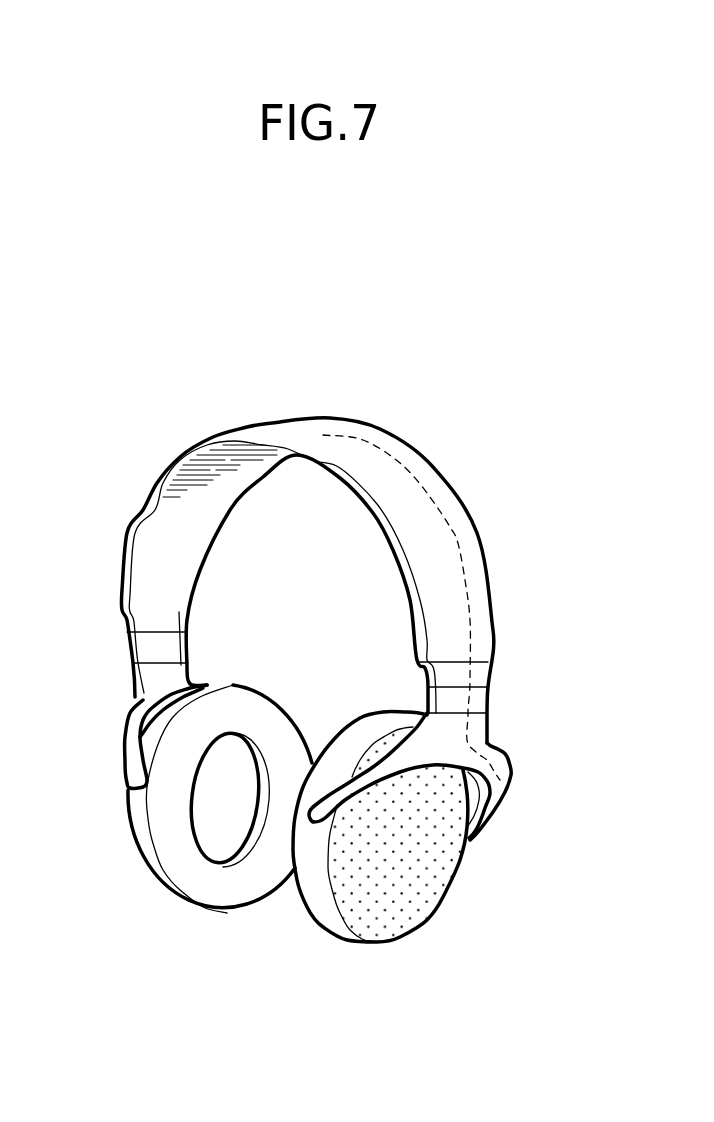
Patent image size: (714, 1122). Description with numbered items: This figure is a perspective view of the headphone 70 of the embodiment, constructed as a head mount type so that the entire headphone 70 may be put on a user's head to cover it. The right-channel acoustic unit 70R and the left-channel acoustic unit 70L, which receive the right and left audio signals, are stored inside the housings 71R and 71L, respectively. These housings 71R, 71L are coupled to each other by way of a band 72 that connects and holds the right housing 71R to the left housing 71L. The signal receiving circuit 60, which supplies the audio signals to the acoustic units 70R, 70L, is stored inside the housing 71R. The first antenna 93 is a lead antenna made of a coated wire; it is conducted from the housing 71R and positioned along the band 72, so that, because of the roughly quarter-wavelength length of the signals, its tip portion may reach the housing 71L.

The headphone 70 is at (329, 381).
The left-channel acoustic unit 70L is at (140, 834).
The right-channel acoustic unit 70R is at (418, 915).
The housing 71L is at (225, 905).
The housing 71R is at (327, 913).
The band 72 is at (127, 537).
The first antenna 93 is at (462, 533).
The signal receiving circuit 60 is at (463, 851).